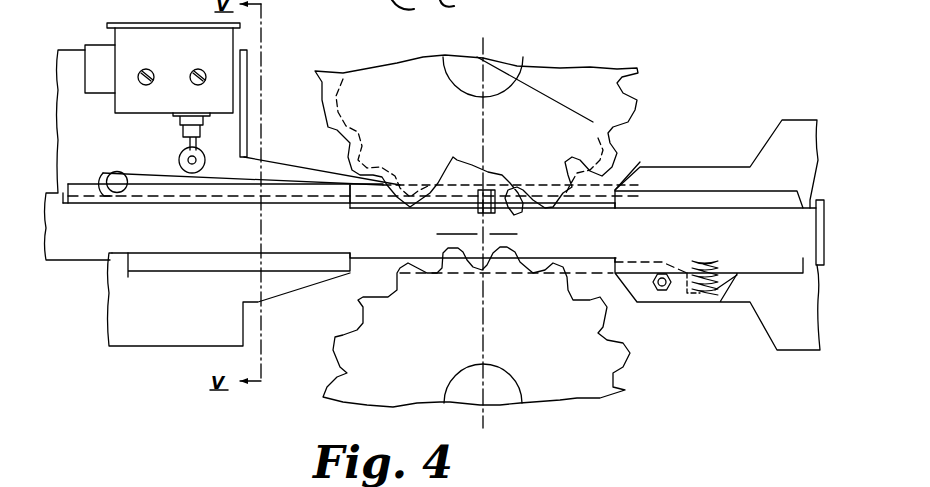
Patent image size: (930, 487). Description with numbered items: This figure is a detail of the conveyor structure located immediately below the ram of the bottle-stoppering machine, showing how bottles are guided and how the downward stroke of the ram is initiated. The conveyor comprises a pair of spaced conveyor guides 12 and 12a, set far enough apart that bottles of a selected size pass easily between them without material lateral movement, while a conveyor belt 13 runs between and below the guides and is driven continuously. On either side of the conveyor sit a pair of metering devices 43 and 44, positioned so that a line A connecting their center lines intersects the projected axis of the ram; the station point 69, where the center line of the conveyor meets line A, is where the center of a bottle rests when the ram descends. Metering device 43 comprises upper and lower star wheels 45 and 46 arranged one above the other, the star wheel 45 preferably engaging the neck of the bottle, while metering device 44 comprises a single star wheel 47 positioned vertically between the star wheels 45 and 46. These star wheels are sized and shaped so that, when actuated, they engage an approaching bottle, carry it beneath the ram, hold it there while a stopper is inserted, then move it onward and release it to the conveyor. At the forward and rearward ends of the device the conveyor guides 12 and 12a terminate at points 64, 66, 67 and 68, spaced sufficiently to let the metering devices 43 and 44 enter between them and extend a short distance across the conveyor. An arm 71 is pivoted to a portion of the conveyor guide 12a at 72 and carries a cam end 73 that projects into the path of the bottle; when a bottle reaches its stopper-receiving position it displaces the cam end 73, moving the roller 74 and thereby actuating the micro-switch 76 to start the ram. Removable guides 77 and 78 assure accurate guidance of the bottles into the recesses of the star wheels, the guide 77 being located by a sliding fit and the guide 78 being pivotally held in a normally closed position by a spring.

The conveyor guide 12 is at (762, 270).
The conveyor guide 12a is at (315, 195).
The conveyor belt 13 is at (87, 255).
The metering device 43 is at (639, 100).
The metering device 44 is at (573, 402).
The upper star wheel 45 is at (522, 149).
The lower star wheel 46 is at (578, 82).
The star wheel 47 is at (476, 327).
The terminal point of conveyor guide 64 is at (350, 207).
The terminal point of conveyor guide 66 is at (350, 257).
The terminal point of conveyor guide 67 is at (617, 209).
The terminal point of conveyor guide 68 is at (615, 259).
The station point 69 is at (480, 231).
The arm 71 is at (280, 180).
The pivot 72 is at (113, 180).
The cam end 73 is at (490, 210).
The roller 74 is at (178, 155).
The micro-switch 76 is at (123, 107).
The removable guide 77 is at (596, 197).
The removable guide 78 is at (598, 272).
The line A is at (481, 290).